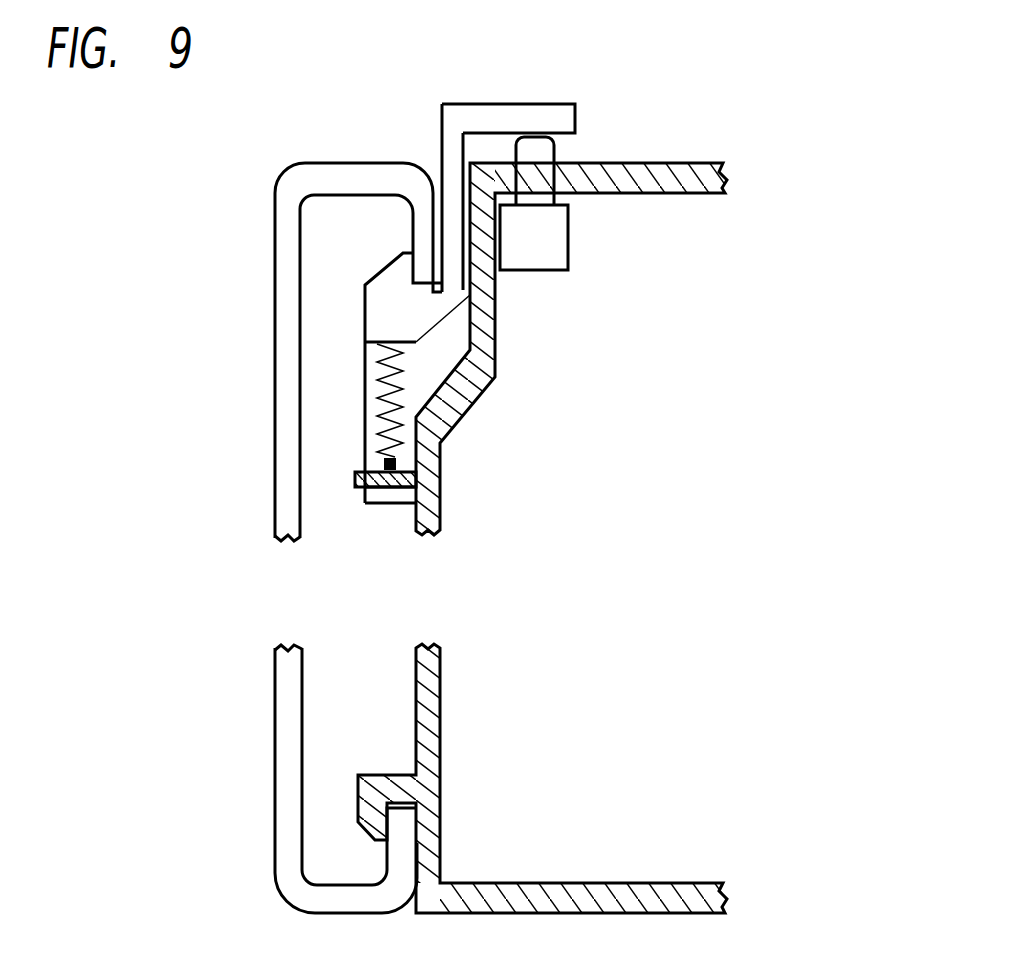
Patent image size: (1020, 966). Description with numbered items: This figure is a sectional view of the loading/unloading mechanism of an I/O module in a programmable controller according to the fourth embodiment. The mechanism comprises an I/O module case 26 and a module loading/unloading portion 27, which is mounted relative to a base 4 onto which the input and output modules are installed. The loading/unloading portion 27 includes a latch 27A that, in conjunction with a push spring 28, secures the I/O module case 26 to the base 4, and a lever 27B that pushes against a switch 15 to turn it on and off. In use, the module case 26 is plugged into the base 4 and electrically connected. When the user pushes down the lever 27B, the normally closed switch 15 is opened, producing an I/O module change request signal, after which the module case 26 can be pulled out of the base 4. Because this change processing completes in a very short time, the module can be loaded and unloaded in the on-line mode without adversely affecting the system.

The base 4 is at (317, 176).
The module loading/unloading portion 27 is at (460, 110).
The latch 27A is at (380, 280).
The lever 27B is at (553, 105).
The I/O module case 26 is at (606, 168).
The switch 15 is at (568, 232).
The push spring 28 is at (373, 413).